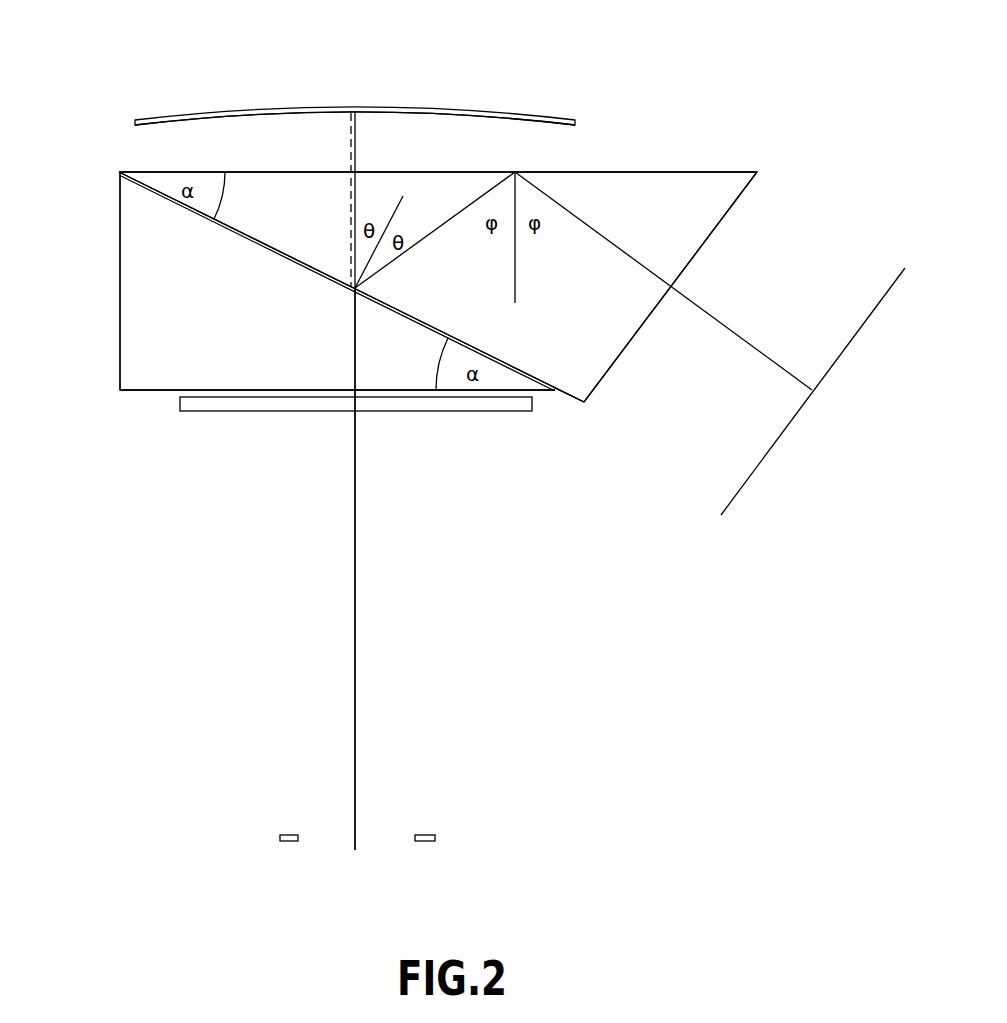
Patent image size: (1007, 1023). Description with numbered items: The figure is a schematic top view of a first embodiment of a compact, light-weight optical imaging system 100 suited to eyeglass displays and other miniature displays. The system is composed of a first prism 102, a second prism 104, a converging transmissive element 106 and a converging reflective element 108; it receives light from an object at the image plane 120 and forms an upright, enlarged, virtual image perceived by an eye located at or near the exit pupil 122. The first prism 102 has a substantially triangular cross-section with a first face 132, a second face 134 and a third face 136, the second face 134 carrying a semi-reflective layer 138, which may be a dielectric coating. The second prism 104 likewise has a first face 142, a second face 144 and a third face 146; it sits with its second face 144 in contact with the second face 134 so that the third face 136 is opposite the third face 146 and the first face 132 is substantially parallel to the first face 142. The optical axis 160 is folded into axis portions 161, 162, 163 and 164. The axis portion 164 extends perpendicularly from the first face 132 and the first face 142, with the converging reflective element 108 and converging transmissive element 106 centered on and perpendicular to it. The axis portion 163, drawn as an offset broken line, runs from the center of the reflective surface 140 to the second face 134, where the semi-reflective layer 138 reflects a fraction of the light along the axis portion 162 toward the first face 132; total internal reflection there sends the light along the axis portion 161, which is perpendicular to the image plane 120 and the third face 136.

The optical imaging system 100 is at (435, 664).
The first prism 102 is at (668, 200).
The second prism 104 is at (150, 349).
The converging transmissive element 106 is at (230, 412).
The converging reflective element 108 is at (236, 110).
The image plane 120 is at (870, 317).
The exit pupil 122 is at (296, 833).
The first face 132 is at (735, 171).
The second face 134 is at (566, 395).
The third face 136 is at (733, 203).
The semi-reflective layer 138 is at (512, 368).
The reflective surface 140 is at (532, 123).
The first face 142 is at (148, 392).
The second face 144 is at (151, 195).
The third face 146 is at (120, 258).
The optical axis 160 is at (357, 519).
The axis portion 161 is at (738, 340).
The axis portion 162 is at (448, 222).
The axis portion 163 is at (352, 219).
The axis portion 164 is at (351, 140).